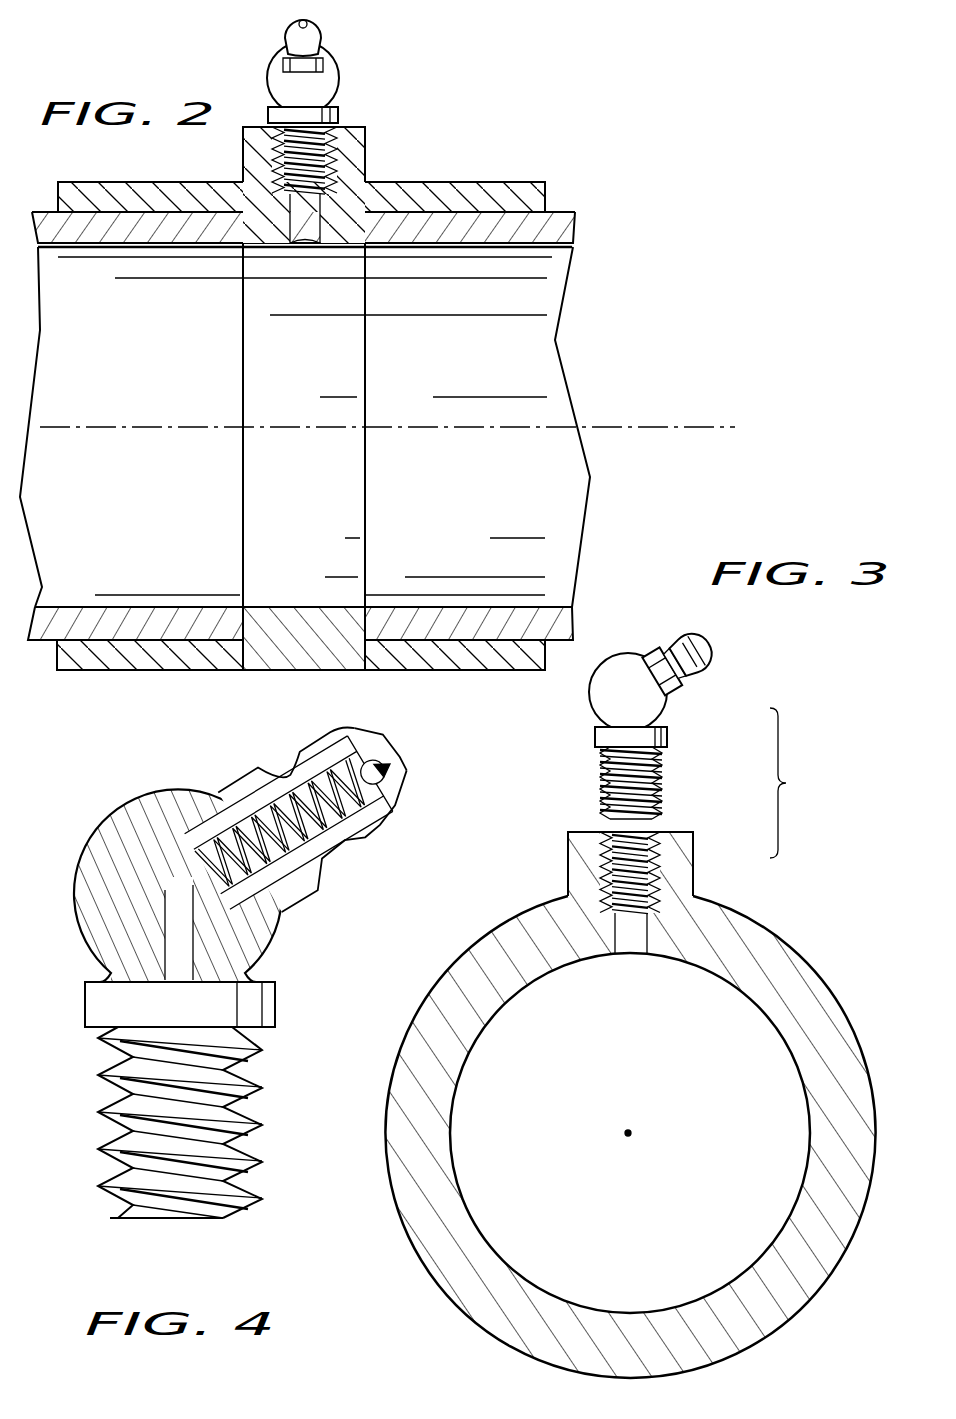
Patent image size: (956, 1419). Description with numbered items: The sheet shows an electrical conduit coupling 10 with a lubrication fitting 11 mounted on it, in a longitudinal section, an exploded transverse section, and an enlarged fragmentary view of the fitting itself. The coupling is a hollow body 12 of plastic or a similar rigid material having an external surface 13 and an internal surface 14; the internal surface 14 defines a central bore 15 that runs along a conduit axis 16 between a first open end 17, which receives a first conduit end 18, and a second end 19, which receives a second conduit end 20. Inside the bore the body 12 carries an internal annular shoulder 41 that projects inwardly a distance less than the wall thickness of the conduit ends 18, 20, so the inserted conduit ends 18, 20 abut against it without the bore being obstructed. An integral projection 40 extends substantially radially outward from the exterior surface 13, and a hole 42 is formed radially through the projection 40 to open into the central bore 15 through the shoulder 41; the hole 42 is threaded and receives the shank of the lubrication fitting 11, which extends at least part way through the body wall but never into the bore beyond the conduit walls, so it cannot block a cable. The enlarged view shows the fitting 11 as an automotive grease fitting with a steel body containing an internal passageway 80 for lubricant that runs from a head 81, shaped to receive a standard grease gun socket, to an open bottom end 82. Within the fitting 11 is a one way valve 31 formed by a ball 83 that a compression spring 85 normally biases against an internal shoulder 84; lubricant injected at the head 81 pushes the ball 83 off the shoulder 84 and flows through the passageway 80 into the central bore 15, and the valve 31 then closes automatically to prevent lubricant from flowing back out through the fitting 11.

In FIG. 2, the electrical conduit coupling 10 is at (353, 353).
In FIG. 3, the electrical conduit coupling 10 is at (576, 877).
In FIG. 2, the lubrication fitting 11 is at (243, 49).
In FIG. 3, the lubrication fitting 11 is at (724, 670).
In FIG. 4, the lubrication fitting 11 is at (285, 983).
In FIG. 2, the hollow body 12 is at (487, 192).
In FIG. 3, the hollow body 12 is at (807, 1024).
In FIG. 2, the external surface 13 is at (470, 182).
In FIG. 2, the internal surface 14 is at (535, 212).
In FIG. 2, the central bore 15 is at (537, 197).
In FIG. 3, the central bore 15 is at (521, 1222).
In FIG. 2, the conduit axis 16 is at (687, 427).
In FIG. 3, the conduit axis 16 is at (634, 1137).
In FIG. 2, the first open end 17 is at (57, 655).
In FIG. 2, the first conduit end 18 is at (242, 362).
In FIG. 2, the second end 19 is at (545, 655).
In FIG. 2, the second conduit end 20 is at (363, 485).
In FIG. 4, the one way valve 31 is at (372, 760).
In FIG. 2, the integral projection 40 is at (342, 150).
In FIG. 3, the integral projection 40 is at (585, 880).
In FIG. 2, the internal annular shoulder 41 is at (292, 515).
In FIG. 2, the hole 42 is at (305, 240).
In FIG. 3, the hole 42 is at (636, 938).
In FIG. 4, the internal passageway 80 is at (190, 947).
In FIG. 4, the head 81 is at (363, 840).
In FIG. 4, the open bottom end 82 is at (170, 1218).
In FIG. 4, the ball 83 is at (367, 763).
In FIG. 4, the internal shoulder 84 is at (402, 778).
In FIG. 4, the compression spring 85 is at (282, 820).